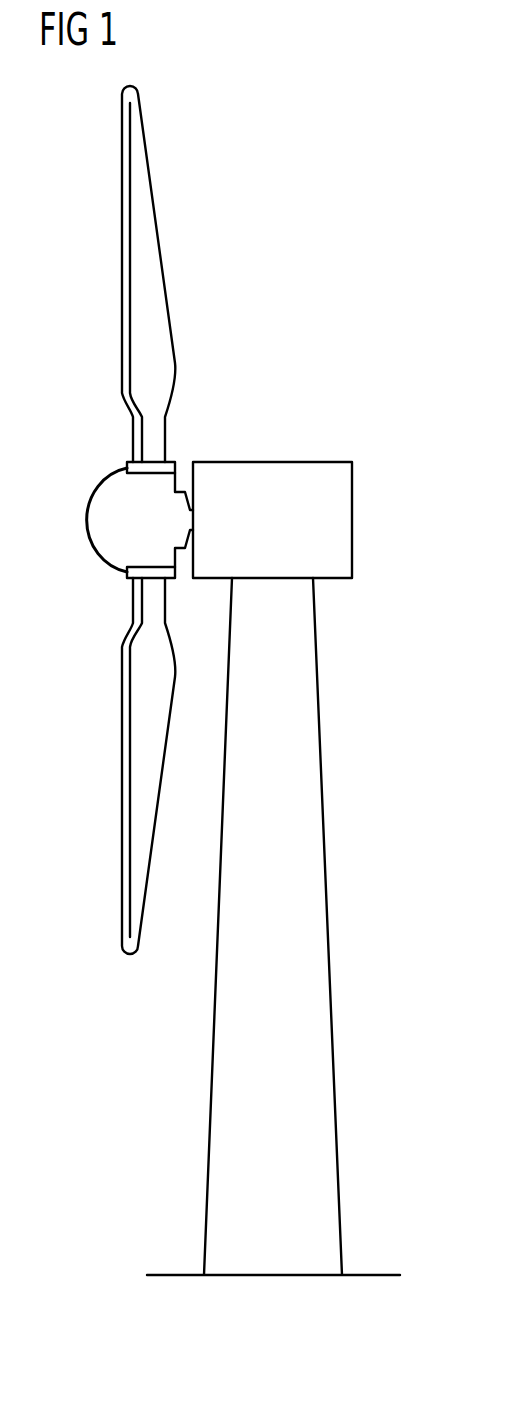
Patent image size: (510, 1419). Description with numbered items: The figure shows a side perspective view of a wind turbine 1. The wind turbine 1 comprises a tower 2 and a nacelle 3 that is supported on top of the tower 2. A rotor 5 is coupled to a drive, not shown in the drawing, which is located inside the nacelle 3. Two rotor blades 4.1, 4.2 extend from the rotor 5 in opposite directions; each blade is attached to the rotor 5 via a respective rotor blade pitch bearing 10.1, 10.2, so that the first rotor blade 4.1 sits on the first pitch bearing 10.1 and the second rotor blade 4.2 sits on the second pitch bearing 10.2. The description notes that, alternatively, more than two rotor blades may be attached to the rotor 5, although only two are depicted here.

The wind turbine 1 is at (337, 342).
The tower 2 is at (313, 848).
The nacelle 3 is at (272, 469).
The rotor 5 is at (86, 520).
The rotor blade 4.1 is at (140, 745).
The rotor blade 4.2 is at (140, 288).
The rotor blade pitch bearing 10.1 is at (130, 573).
The rotor blade pitch bearing 10.2 is at (131, 466).